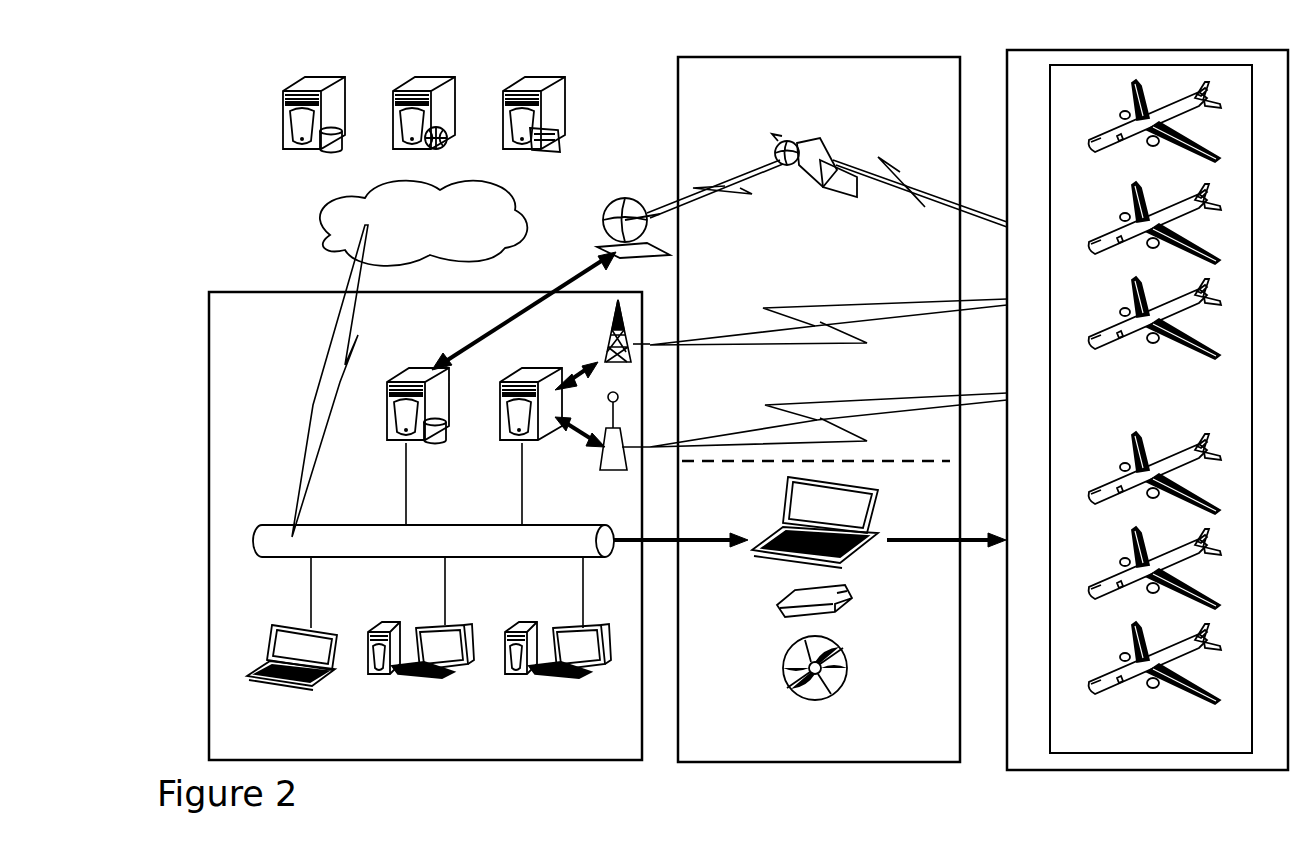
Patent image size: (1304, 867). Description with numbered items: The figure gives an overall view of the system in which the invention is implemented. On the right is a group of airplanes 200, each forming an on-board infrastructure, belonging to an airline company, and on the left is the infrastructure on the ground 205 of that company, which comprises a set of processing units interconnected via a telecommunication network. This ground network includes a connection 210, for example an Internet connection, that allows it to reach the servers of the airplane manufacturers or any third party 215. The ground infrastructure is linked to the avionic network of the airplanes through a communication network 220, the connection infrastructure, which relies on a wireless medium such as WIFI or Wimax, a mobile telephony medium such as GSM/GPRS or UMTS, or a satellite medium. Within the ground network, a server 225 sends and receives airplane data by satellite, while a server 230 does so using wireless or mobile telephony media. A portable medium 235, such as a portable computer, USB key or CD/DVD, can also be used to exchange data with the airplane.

The group of airplanes 200 is at (1173, 65).
The infrastructure on the ground 205 is at (439, 479).
The connection 210 is at (325, 227).
The servers of the airplane manufacturers or third party 215 is at (392, 70).
The communication network 220 is at (765, 763).
The server 225 is at (514, 446).
The server 230 is at (399, 446).
The portable medium 235 is at (857, 559).